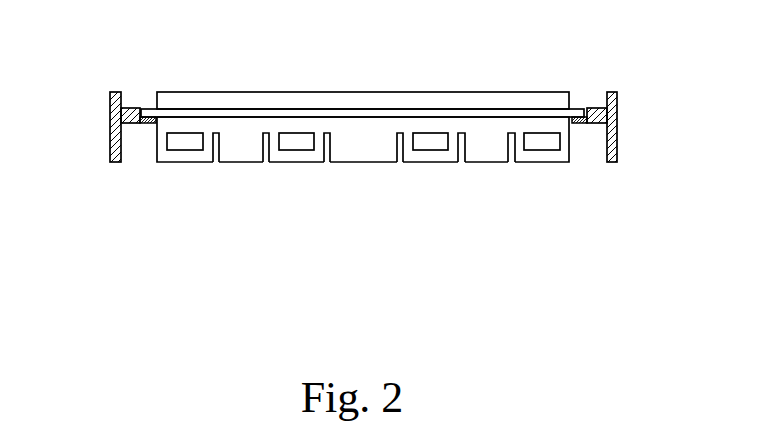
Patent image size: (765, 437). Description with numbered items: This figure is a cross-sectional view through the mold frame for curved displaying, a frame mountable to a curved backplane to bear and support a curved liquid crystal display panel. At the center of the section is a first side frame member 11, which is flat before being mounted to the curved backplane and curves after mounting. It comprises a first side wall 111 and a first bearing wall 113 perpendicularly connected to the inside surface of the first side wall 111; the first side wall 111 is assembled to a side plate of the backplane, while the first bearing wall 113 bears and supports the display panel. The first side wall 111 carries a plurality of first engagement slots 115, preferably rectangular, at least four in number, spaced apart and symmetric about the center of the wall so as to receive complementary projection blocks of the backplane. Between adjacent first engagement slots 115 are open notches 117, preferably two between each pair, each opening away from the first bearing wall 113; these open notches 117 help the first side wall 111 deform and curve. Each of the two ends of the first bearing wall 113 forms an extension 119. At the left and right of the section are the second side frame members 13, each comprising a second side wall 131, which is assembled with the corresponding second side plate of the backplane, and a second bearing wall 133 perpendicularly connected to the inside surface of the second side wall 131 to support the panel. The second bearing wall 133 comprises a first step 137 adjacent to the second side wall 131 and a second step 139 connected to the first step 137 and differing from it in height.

The first side frame member 11 is at (362, 125).
The first side wall 111 is at (363, 173).
The first bearing wall 113 is at (255, 116).
The first engagement slot 115 is at (424, 140).
The open notch 117 is at (327, 133).
The extension 119 is at (578, 112).
The second side frame member 13 is at (107, 145).
The second side wall 131 is at (113, 92).
The second bearing wall 133 is at (131, 188).
The first step 137 is at (132, 123).
The second step 139 is at (144, 123).